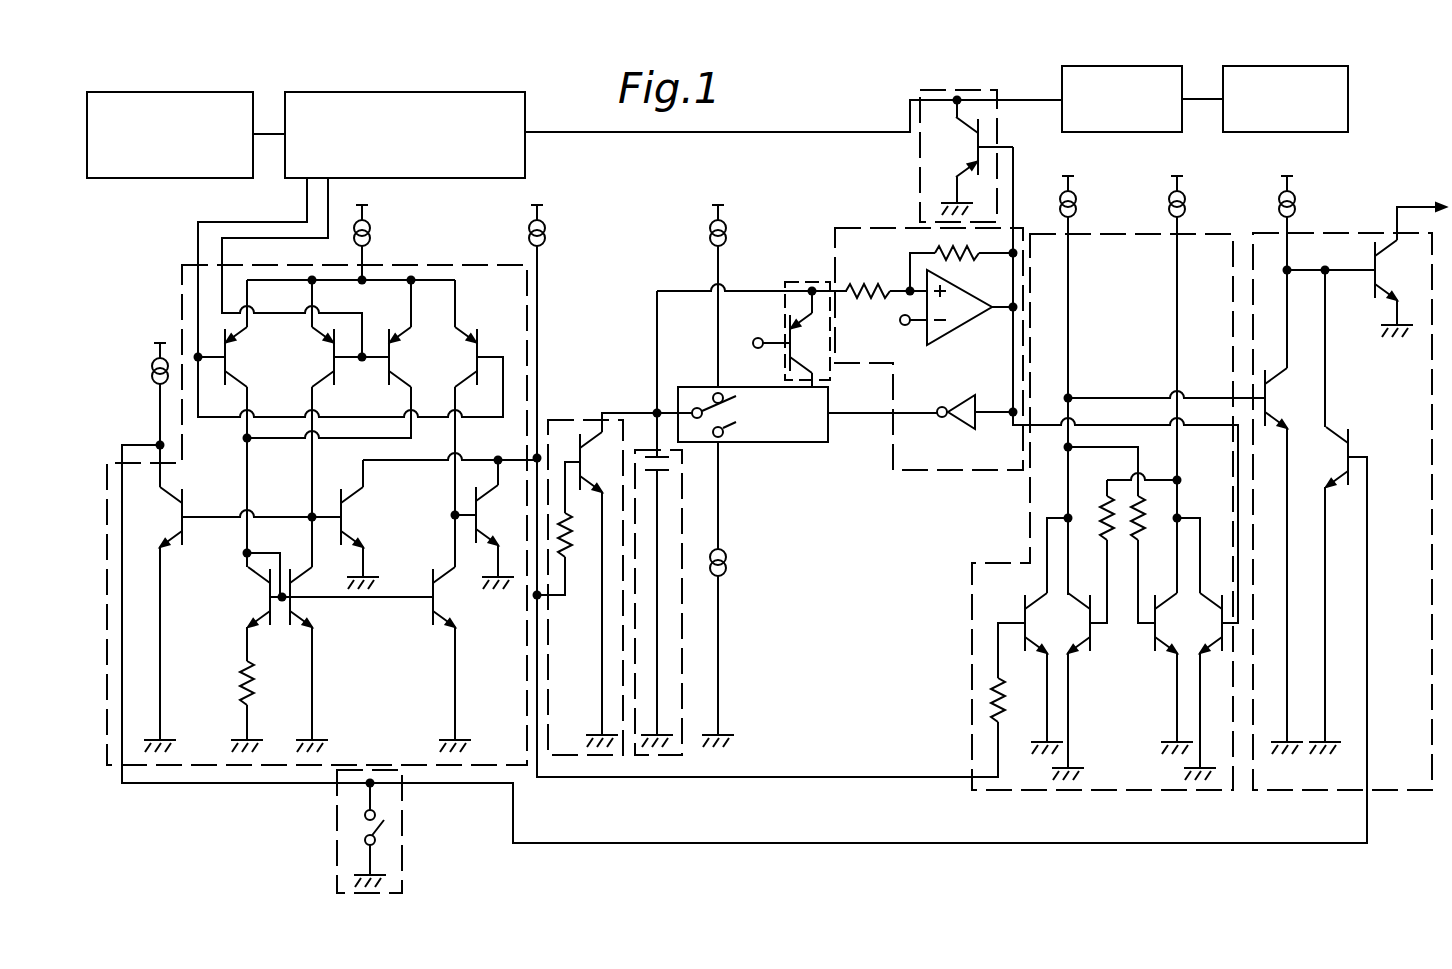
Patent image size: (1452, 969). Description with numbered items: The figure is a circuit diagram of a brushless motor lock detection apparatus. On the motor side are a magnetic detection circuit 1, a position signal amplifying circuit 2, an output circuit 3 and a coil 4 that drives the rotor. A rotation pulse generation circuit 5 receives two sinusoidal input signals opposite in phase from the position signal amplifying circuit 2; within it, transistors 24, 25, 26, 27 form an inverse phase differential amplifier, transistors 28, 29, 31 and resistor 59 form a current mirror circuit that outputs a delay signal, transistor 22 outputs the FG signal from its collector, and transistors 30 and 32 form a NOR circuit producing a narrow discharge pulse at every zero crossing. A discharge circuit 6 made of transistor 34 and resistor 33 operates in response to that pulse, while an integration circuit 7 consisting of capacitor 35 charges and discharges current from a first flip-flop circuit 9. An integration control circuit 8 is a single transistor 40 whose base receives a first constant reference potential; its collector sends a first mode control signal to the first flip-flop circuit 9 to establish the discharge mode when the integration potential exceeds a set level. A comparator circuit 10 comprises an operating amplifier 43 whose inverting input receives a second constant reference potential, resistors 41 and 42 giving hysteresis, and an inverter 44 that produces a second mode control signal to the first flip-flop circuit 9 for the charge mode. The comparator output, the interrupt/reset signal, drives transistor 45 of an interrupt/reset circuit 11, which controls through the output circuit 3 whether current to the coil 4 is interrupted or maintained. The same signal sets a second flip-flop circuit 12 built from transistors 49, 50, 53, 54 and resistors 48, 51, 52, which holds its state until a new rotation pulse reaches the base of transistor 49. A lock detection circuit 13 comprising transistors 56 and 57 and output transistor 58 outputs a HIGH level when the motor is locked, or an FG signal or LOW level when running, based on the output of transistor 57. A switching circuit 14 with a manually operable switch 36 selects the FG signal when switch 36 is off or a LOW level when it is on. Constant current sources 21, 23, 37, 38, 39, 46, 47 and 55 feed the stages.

The magnetic detection circuit 1 is at (180, 90).
The position signal amplifying circuit 2 is at (433, 90).
The output circuit 3 is at (1127, 66).
The coil 4 is at (1297, 66).
The rotation pulse generation circuit 5 is at (432, 265).
The discharge circuit 6 is at (565, 420).
The integration circuit 7 is at (672, 755).
The integration control circuit 8 is at (812, 282).
The first flip-flop circuit 9 is at (775, 442).
The comparator circuit 10 is at (928, 470).
The interrupt/reset circuit 11 is at (975, 90).
The second flip-flop circuit 12 is at (1100, 234).
The lock detection circuit 13 is at (1325, 233).
The switching circuit 14 is at (402, 858).
The constant current source 21 is at (154, 366).
The transistor 22 is at (178, 510).
The constant current source 23 is at (368, 232).
The transistor 24 is at (234, 362).
The transistor 25 is at (330, 347).
The transistor 26 is at (394, 350).
The transistor 27 is at (472, 360).
The transistor 28 is at (262, 598).
The transistor 29 is at (298, 602).
The transistor 30 is at (344, 520).
The transistor 31 is at (440, 600).
The transistor 32 is at (490, 508).
The resistor 33 is at (560, 545).
The transistor 34 is at (590, 450).
The capacitor 35 is at (670, 478).
The manually operable switch 36 is at (385, 828).
The constant current source 37 is at (545, 232).
The constant current source 38 is at (726, 232).
The constant current source 39 is at (728, 565).
The transistor 40 is at (812, 340).
The resistor 41 is at (870, 291).
The resistor 42 is at (960, 262).
The operating amplifier 43 is at (960, 325).
The inverter 44 is at (962, 425).
The transistor 45 is at (975, 150).
The constant current source 46 is at (1080, 200).
The constant current source 47 is at (1190, 200).
The resistor 48 is at (995, 700).
The transistor 49 is at (1040, 600).
The transistor 50 is at (1080, 640).
The resistor 51 is at (1110, 530).
The resistor 52 is at (1142, 528).
The transistor 53 is at (1168, 640).
The transistor 54 is at (1205, 605).
The constant current source 55 is at (1300, 200).
The transistor 56 is at (1274, 398).
The transistor 57 is at (1345, 440).
The output transistor 58 is at (1383, 265).
The resistor 59 is at (245, 670).